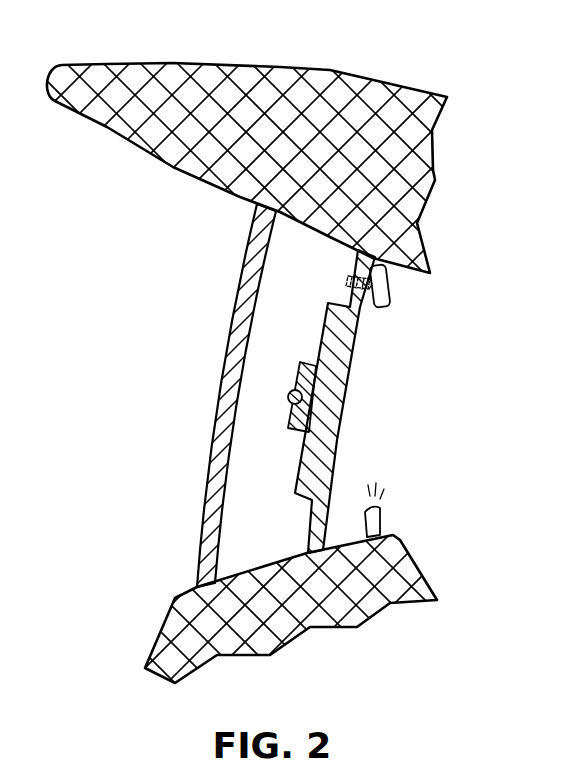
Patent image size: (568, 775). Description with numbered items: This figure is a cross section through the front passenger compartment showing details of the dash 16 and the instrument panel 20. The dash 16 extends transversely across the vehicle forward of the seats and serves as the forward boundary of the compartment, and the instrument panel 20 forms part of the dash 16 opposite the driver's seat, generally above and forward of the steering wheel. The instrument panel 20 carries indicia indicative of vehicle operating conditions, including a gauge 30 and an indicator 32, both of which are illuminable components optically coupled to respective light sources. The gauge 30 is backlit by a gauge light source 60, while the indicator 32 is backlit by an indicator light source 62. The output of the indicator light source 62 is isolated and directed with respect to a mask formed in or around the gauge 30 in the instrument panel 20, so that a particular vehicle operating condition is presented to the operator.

The dash 16 is at (392, 84).
The instrument panel 20 is at (206, 531).
The gauge 30 is at (323, 342).
The indicator 32 is at (347, 279).
The gauge light source 60 is at (393, 526).
The indicator light source 62 is at (386, 286).